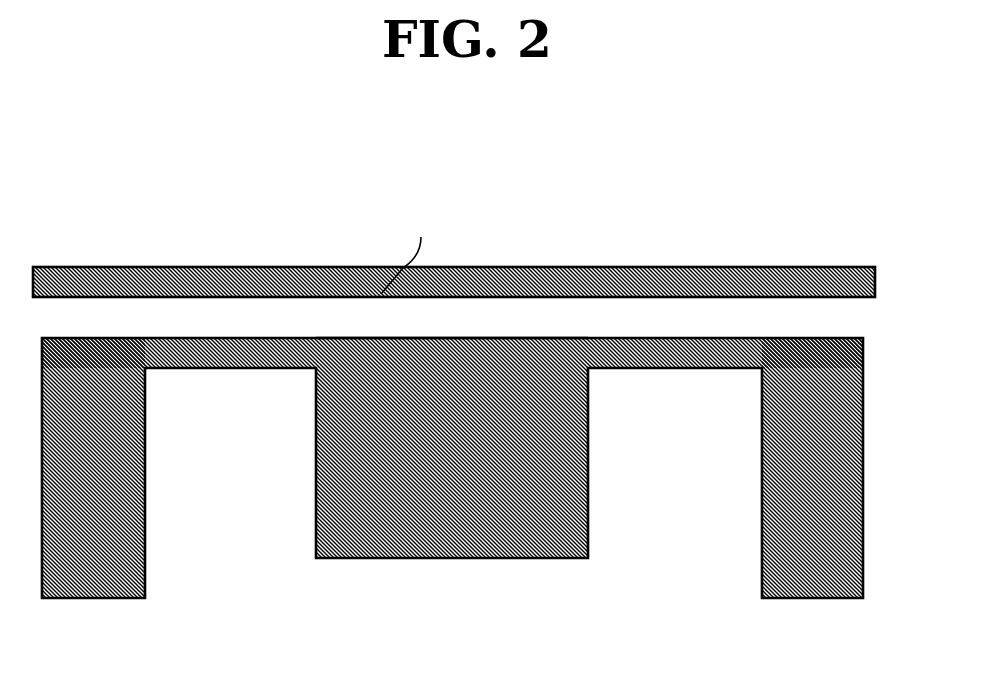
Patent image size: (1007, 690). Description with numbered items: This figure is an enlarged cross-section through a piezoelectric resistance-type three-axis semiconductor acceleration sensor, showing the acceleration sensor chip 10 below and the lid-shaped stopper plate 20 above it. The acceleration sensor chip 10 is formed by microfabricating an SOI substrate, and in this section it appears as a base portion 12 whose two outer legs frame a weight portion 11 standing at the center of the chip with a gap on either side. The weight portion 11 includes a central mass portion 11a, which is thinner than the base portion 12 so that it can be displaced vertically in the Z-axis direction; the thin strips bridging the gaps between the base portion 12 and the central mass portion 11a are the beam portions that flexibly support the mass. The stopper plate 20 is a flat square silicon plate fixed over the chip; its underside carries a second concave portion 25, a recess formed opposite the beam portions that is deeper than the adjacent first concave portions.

The acceleration sensor chip 10 is at (484, 454).
The weight portion (mass) 11 is at (425, 338).
The central mass portion 11a is at (473, 362).
The base portion 12 is at (850, 454).
The stopper plate 20 is at (502, 261).
The second concave portion 25 is at (410, 253).